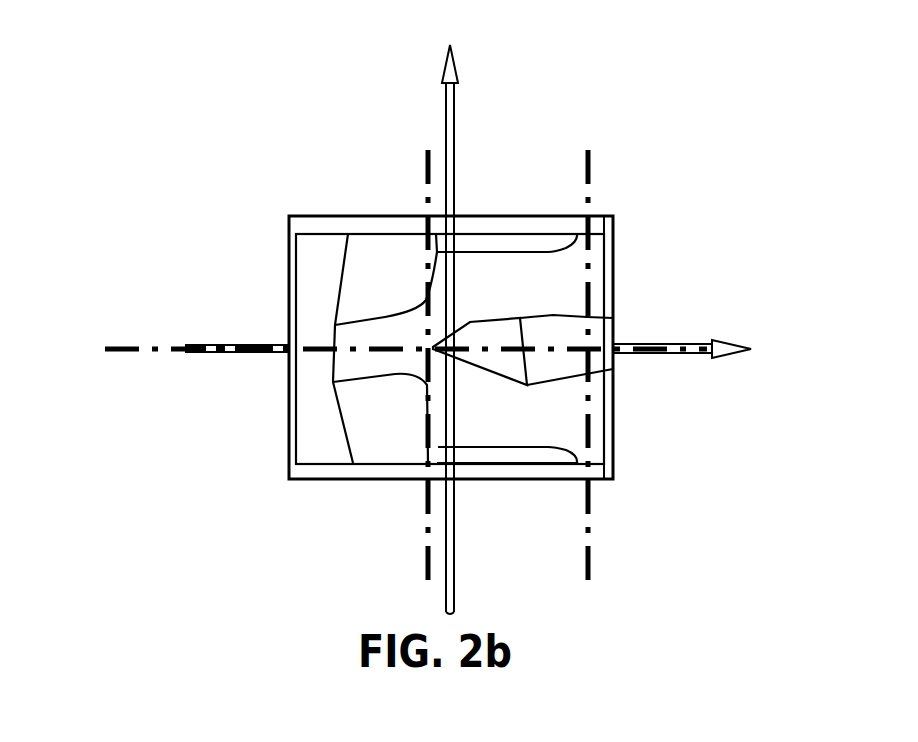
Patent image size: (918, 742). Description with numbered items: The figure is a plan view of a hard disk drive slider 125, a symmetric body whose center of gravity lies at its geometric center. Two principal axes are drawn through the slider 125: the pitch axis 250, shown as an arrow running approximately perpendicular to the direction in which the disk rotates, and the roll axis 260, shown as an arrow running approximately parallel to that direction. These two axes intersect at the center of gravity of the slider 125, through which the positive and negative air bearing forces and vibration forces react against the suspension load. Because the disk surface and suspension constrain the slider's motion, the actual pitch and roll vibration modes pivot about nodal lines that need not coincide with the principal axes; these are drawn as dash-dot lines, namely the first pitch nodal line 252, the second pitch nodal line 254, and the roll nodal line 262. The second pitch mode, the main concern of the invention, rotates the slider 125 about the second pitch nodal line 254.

The hard disk drive slider 125 is at (240, 199).
The pitch axis 250 is at (451, 107).
The P1 nodal line 252 is at (590, 168).
The P2 nodal line 254 is at (426, 170).
The roll axis 260 is at (707, 352).
The R1 nodal line 262 is at (120, 352).